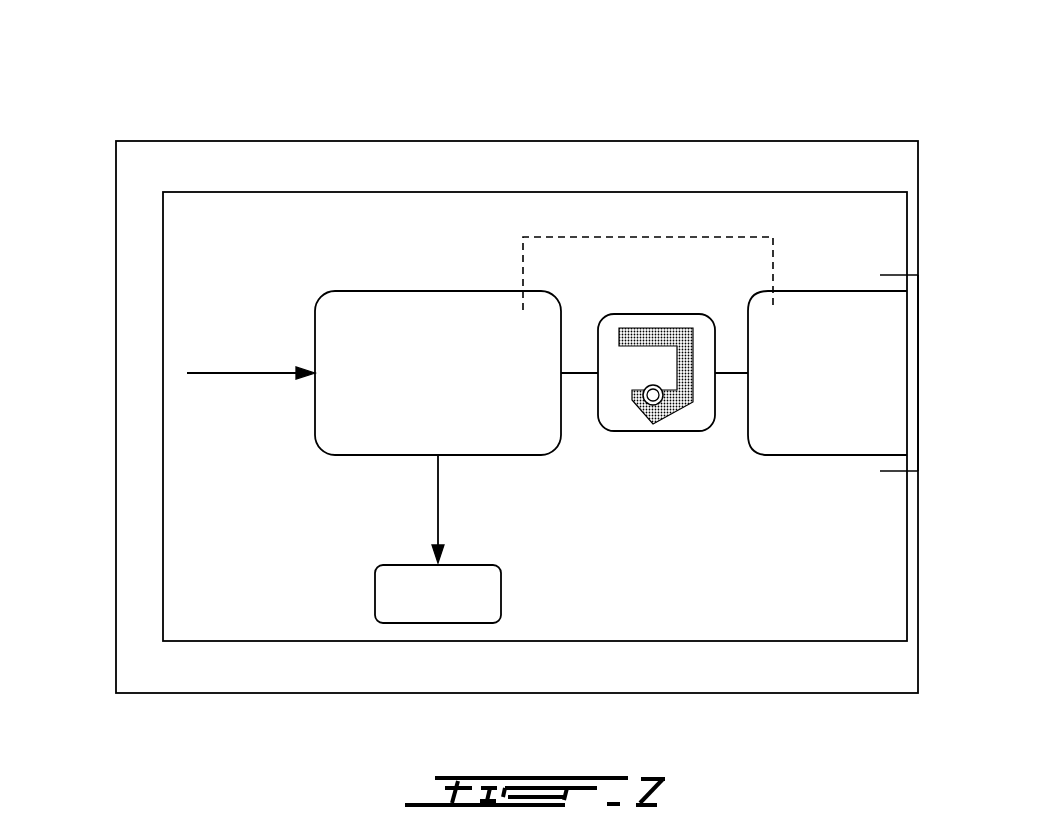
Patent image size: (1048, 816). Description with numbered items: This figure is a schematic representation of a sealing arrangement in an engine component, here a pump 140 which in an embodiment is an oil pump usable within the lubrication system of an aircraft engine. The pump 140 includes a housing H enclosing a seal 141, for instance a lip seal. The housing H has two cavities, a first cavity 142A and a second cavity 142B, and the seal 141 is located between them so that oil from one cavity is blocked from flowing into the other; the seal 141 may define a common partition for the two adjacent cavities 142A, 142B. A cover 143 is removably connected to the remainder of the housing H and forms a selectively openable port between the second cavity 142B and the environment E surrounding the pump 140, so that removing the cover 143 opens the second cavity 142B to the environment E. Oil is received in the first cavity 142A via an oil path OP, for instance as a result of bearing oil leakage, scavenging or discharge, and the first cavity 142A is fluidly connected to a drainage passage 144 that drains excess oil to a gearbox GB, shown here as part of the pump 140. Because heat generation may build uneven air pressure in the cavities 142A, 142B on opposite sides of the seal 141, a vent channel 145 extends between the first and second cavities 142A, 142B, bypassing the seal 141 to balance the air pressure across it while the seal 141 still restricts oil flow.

The pump 140 is at (884, 141).
The housing H is at (689, 192).
The seal 141 is at (688, 298).
The first cavity 142A is at (443, 291).
The second cavity 142B is at (845, 291).
The cover 143 is at (920, 304).
The drainage passage 144 is at (438, 500).
The vent channel 145 is at (597, 237).
The oil path OP is at (253, 373).
The gearbox GB is at (455, 609).
The environment E is at (979, 728).